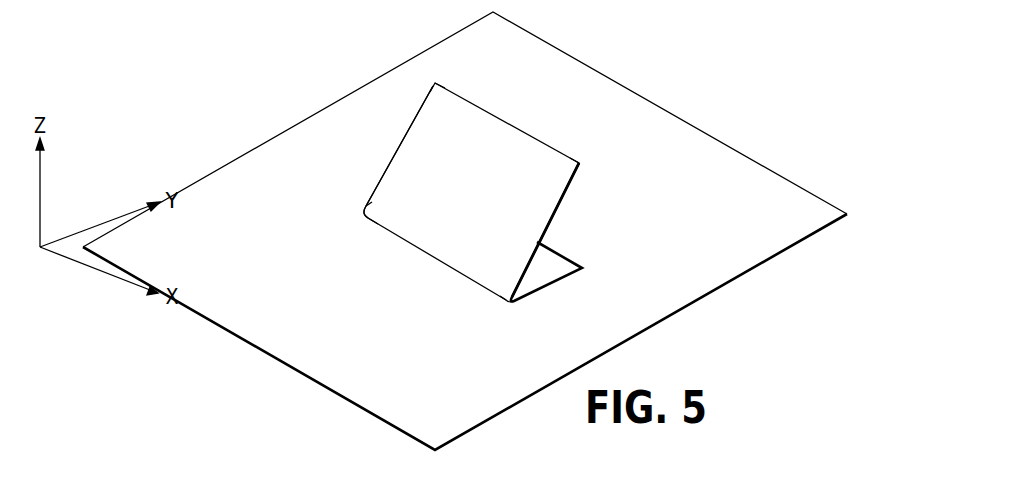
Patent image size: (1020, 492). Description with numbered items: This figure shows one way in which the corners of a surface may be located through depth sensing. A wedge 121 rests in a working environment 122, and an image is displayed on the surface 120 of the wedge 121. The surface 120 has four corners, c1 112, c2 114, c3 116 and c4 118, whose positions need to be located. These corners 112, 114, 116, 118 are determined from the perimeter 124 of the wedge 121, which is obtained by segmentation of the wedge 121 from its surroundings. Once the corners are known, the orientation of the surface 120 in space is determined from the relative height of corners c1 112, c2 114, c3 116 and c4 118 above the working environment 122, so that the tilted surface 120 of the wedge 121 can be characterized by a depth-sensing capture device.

The corner c1 112 is at (332, 232).
The corner c2 114 is at (452, 54).
The corner c3 116 is at (503, 339).
The corner c4 118 is at (606, 143).
The surface 120 is at (445, 227).
The wedge 121 is at (560, 200).
The working environment 122 is at (762, 186).
The perimeter 124 is at (400, 145).